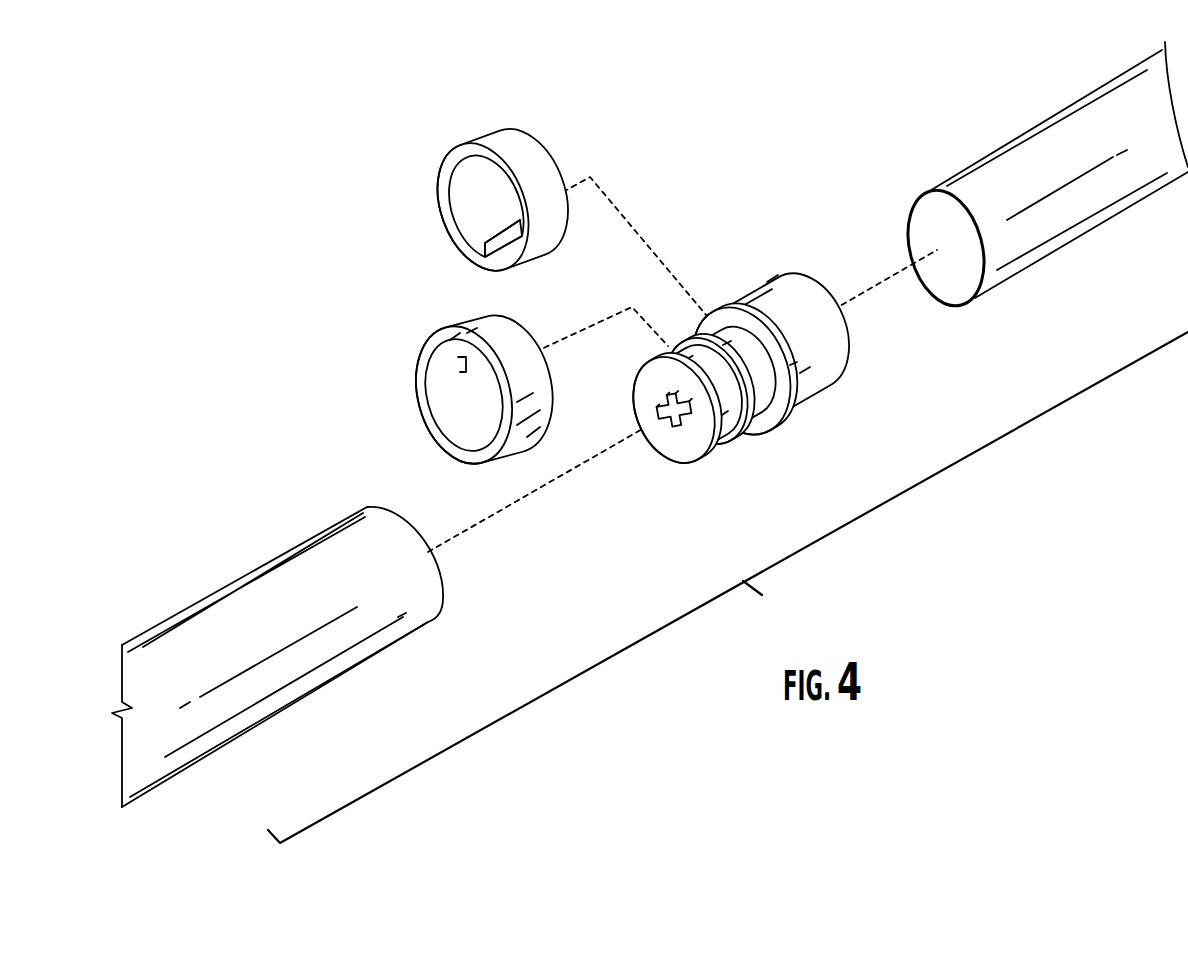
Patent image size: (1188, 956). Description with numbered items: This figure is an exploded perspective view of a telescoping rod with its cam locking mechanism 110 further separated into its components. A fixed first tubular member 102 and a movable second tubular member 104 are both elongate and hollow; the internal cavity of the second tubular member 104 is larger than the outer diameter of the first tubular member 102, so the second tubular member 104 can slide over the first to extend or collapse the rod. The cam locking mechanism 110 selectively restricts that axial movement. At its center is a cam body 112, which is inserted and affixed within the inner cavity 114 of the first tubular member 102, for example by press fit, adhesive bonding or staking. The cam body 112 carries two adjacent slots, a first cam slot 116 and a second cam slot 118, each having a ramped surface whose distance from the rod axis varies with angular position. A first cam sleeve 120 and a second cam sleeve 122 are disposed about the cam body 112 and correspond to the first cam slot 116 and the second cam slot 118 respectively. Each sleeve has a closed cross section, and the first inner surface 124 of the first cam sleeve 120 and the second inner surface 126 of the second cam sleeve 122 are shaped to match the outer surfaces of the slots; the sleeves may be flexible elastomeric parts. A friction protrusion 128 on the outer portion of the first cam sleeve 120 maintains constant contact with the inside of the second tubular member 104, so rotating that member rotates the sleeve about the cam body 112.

The first tubular member 102 is at (1010, 206).
The second tubular member 104 is at (210, 592).
The cam locking mechanism 110 is at (733, 342).
The cam body 112 is at (660, 468).
The inner cavity 114 is at (958, 288).
The first cam slot 116 is at (734, 456).
The second cam slot 118 is at (785, 428).
The first cam sleeve 120 is at (448, 402).
The second cam sleeve 122 is at (486, 183).
The first inner surface 124 is at (455, 423).
The second inner surface 126 is at (470, 210).
The friction protrusion 128 is at (512, 136).